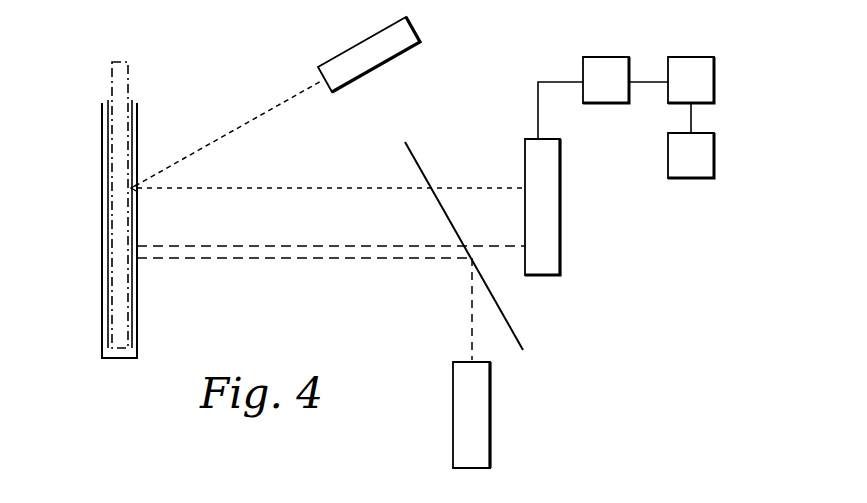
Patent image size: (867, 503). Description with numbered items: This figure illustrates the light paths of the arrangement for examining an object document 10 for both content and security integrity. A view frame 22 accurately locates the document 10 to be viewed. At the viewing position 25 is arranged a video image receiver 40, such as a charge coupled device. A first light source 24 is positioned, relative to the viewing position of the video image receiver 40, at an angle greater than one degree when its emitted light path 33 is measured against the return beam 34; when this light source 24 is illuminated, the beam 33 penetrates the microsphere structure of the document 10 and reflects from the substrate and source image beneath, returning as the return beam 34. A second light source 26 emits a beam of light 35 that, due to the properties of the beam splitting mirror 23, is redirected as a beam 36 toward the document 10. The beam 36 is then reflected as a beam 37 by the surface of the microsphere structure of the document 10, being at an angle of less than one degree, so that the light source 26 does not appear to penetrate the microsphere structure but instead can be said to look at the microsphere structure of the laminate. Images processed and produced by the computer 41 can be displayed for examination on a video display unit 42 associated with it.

The document 10 is at (110, 316).
The view frame 22 is at (102, 188).
The beam splitting mirror 23 is at (506, 321).
The light source 24 is at (392, 58).
The viewing position 25 is at (560, 168).
The light source 26 is at (490, 414).
The emitted light path 33 is at (229, 128).
The return beam 34 is at (454, 190).
The beam of light 35 is at (470, 300).
The beam 36 is at (248, 259).
The beam 37 is at (487, 246).
The video image receiver 40 is at (606, 57).
The computer 41 is at (715, 68).
The video display unit 42 is at (715, 157).